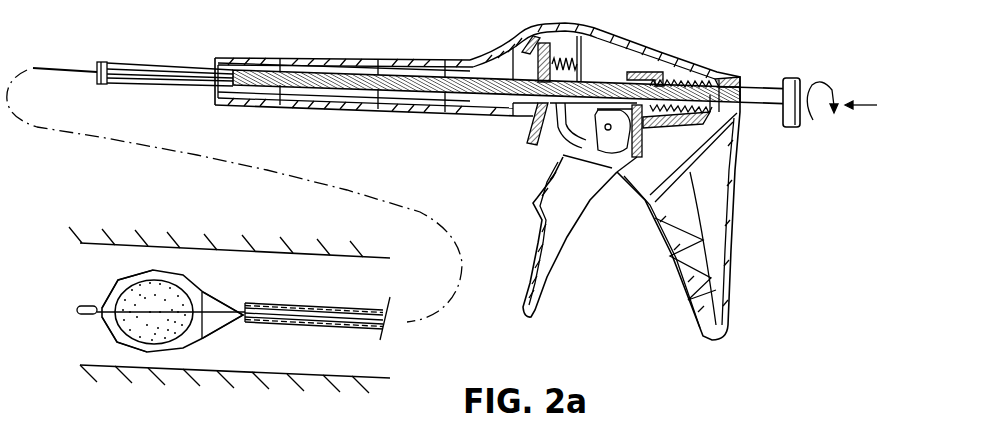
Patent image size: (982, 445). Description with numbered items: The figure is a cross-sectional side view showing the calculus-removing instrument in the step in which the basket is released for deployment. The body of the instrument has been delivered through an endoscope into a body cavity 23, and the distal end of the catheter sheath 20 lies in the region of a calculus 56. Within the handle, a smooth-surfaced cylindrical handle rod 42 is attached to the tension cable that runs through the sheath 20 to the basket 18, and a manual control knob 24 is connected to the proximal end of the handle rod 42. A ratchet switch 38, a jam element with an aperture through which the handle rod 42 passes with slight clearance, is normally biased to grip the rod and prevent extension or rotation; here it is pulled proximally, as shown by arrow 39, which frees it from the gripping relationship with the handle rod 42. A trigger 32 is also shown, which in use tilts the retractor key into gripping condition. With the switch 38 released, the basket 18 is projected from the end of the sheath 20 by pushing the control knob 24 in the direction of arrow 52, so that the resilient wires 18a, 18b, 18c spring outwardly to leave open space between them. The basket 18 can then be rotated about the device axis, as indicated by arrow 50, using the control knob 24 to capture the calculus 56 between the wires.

The basket 18 is at (214, 277).
The resilient wire 18a is at (110, 296).
The resilient wire 18b is at (203, 322).
The resilient wire 18c is at (110, 330).
The catheter sheath 20 is at (288, 304).
The body cavity 23 is at (90, 258).
The manual control knob 24 is at (786, 128).
The trigger 32 is at (532, 253).
The ratchet switch 38 is at (533, 133).
The arrow 39 is at (543, 156).
The handle rod 42 is at (312, 105).
The arrow 50 is at (833, 82).
The arrow 52 is at (870, 106).
The calculus 56 is at (108, 317).